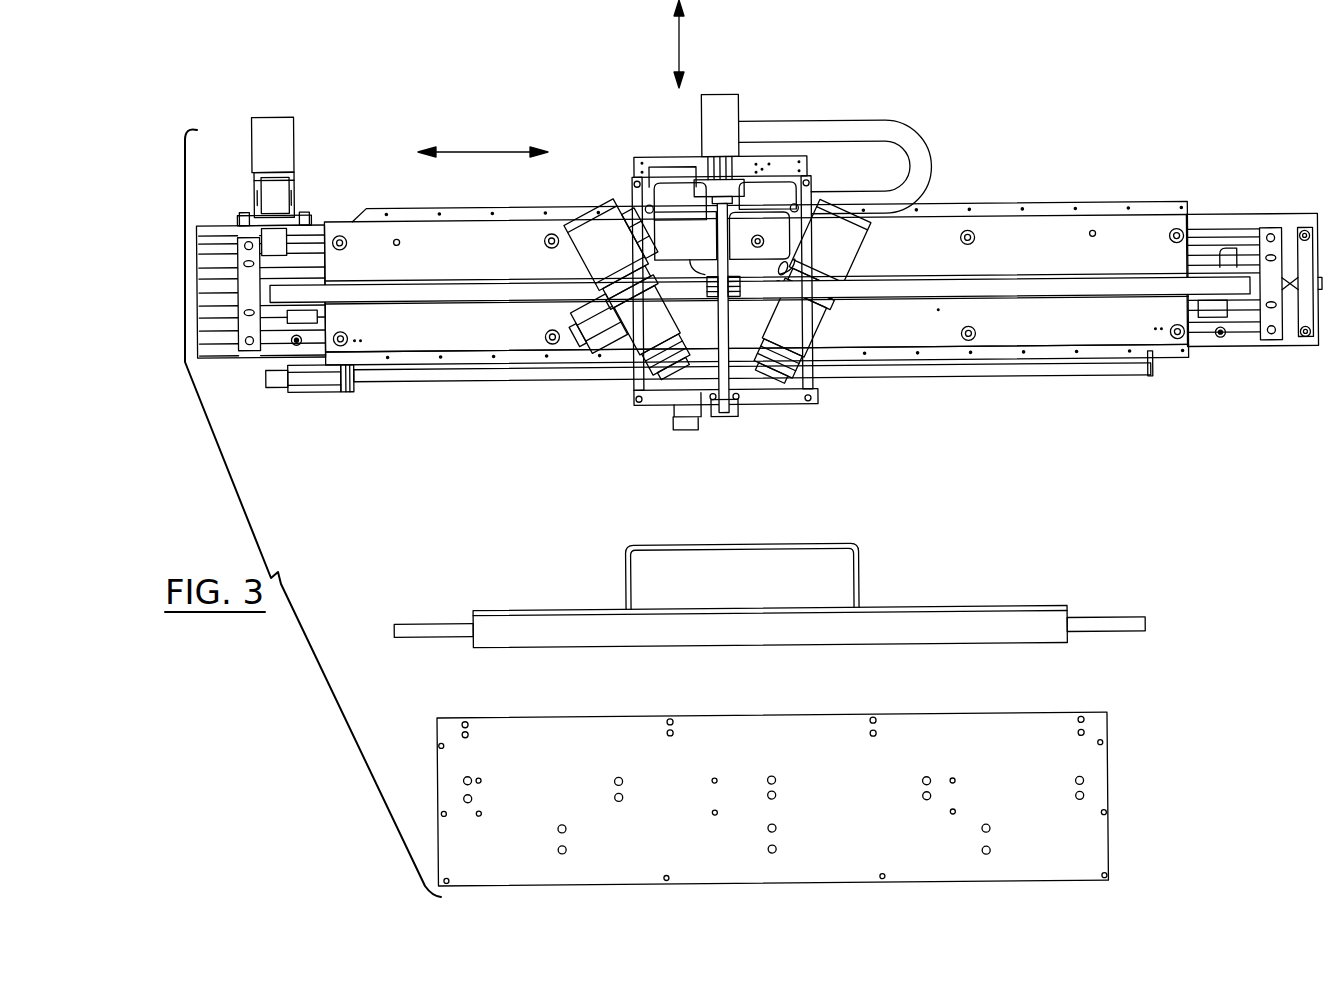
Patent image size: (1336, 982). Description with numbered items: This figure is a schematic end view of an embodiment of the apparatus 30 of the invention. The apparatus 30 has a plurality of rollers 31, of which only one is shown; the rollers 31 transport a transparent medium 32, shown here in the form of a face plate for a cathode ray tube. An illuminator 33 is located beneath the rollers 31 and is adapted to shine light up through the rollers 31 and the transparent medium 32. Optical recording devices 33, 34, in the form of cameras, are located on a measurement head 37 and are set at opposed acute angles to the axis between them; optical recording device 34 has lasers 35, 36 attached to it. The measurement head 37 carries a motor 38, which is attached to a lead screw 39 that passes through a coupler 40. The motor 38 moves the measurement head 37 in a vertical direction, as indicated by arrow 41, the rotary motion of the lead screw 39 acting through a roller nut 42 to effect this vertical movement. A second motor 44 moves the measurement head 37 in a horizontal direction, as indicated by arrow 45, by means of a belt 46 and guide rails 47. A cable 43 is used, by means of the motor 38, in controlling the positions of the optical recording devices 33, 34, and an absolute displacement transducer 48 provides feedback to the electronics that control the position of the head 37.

The apparatus 30 is at (1192, 574).
The rollers 31 is at (961, 622).
The transparent medium 32 is at (799, 562).
The illuminator / optical recording device 33 is at (845, 220).
The optical recording device 34 is at (598, 232).
The laser 35 is at (575, 312).
The laser 36 is at (648, 232).
The measurement head 37 is at (775, 162).
The motor 38 is at (730, 100).
The lead screw 39 is at (727, 330).
The coupler 40 is at (692, 149).
The arrow 41 is at (681, 33).
The roller nut 42 is at (694, 268).
The cable 43 is at (920, 172).
The motor 44 is at (280, 126).
The arrow 45 is at (480, 152).
The belt 46 is at (393, 290).
The guide rails 47 is at (1220, 236).
The absolute displacement transducer 48 is at (307, 385).